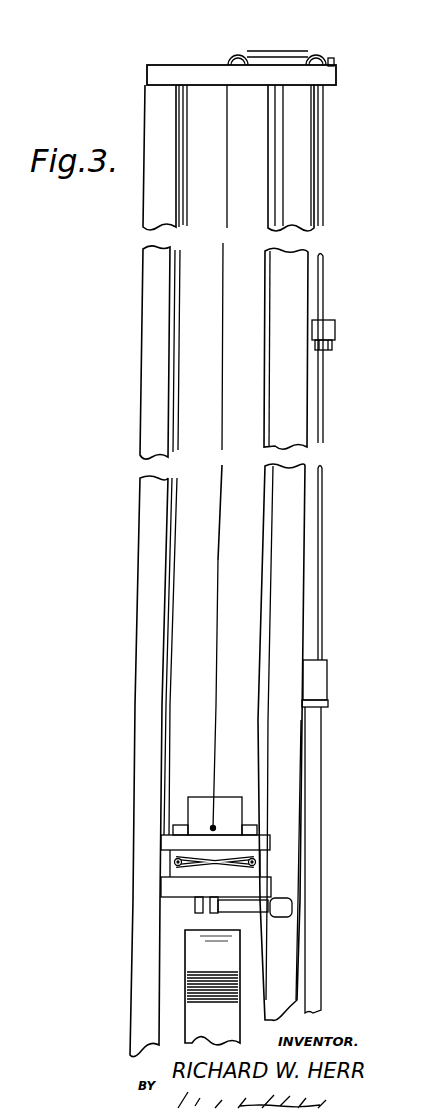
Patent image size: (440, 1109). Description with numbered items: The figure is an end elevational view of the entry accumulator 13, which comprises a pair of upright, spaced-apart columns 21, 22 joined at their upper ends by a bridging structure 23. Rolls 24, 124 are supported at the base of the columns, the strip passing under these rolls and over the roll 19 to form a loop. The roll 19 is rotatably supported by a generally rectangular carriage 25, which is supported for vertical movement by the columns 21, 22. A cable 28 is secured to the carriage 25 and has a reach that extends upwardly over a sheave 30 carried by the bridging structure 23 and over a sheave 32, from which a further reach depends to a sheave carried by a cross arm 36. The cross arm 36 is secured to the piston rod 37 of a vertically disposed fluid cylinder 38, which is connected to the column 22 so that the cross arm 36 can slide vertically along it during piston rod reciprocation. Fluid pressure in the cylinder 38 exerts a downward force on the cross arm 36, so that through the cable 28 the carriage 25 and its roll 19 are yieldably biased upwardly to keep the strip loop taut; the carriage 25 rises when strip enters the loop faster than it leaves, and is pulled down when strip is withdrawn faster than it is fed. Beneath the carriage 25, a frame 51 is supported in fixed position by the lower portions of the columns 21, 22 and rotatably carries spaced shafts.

The entry accumulator 13 is at (136, 406).
The roll 19 is at (196, 800).
The column 21 is at (150, 281).
The column 22 is at (298, 272).
The bridging structure 23 is at (165, 72).
The roll 24 is at (152, 989).
The carriage 25 is at (166, 845).
The cable 28 is at (228, 458).
The sheave 30 is at (234, 55).
The sheave 32 is at (318, 57).
The cross arm 36 is at (337, 330).
The piston rod 37 is at (324, 400).
The fluid cylinder 38 is at (318, 728).
The frame 51 is at (168, 889).
The roll 124 is at (196, 951).